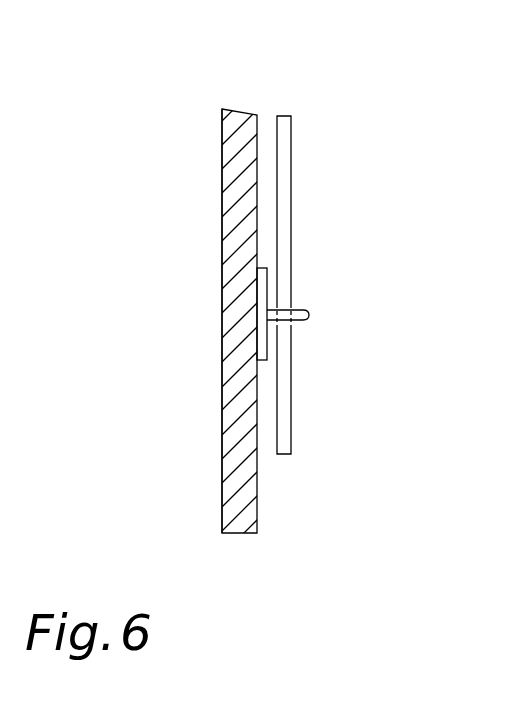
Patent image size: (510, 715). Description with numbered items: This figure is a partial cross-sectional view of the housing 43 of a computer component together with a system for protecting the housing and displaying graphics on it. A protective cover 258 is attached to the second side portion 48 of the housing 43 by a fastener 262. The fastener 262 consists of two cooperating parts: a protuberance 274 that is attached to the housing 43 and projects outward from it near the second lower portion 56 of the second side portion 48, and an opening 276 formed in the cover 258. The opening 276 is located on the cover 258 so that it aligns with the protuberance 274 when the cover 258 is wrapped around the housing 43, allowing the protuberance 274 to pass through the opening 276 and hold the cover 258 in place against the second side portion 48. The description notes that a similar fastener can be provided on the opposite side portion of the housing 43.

The housing 43 is at (242, 78).
The second side portion 48 is at (222, 187).
The second lower portion 56 is at (222, 421).
The protective cover 258 is at (291, 142).
The fastener 262 is at (352, 318).
The protuberance 274 is at (306, 312).
The opening 276 is at (290, 323).